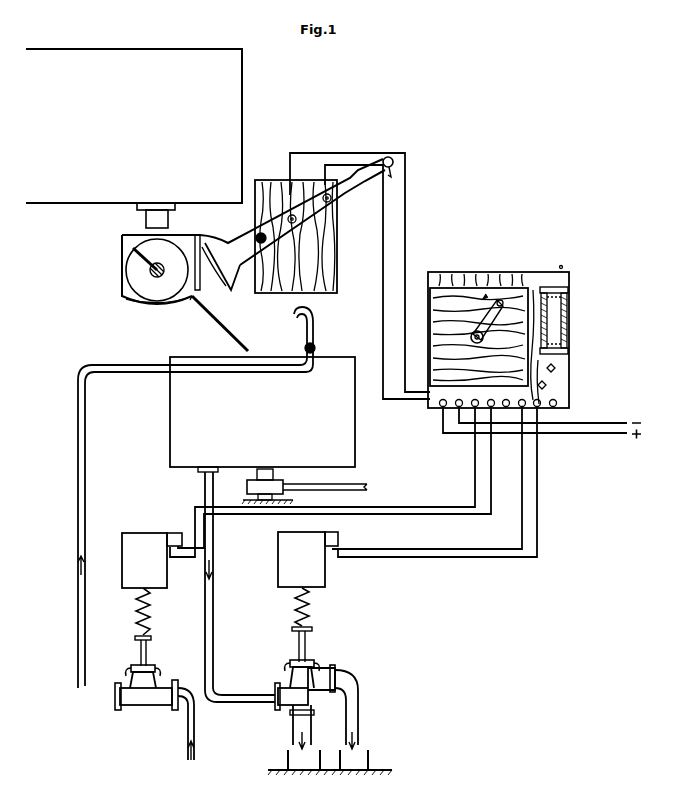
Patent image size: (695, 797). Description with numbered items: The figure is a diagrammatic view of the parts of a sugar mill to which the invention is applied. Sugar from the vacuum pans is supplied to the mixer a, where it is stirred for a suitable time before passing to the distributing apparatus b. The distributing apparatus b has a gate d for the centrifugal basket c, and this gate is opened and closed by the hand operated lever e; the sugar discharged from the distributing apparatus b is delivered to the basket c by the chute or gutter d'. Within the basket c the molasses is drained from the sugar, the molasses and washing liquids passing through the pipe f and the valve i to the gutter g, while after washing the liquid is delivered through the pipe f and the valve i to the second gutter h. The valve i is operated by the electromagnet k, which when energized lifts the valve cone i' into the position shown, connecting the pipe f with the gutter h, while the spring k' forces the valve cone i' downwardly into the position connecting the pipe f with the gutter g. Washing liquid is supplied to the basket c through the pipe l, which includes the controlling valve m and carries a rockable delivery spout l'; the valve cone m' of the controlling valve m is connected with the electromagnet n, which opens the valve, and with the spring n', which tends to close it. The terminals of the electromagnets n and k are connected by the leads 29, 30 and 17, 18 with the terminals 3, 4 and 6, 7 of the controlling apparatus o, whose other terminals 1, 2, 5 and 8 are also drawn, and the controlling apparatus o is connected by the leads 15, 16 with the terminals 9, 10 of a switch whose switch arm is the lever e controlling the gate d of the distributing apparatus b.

The mixer a is at (242, 86).
The distributing apparatus b is at (122, 250).
The centrifugal basket c is at (356, 429).
The gate d is at (182, 314).
The chute or gutter d' is at (224, 323).
The hand operated lever e is at (392, 158).
The pipe f is at (214, 606).
The gutter g is at (364, 752).
The second gutter h is at (288, 754).
The valve i is at (316, 693).
The valve cone i' is at (293, 672).
The electromagnet k is at (296, 559).
The spring k' is at (313, 625).
The pipe l is at (183, 505).
The rockable delivery spout l' is at (310, 330).
The controlling valve m is at (154, 720).
The valve cone m' is at (157, 671).
The electromagnet n is at (152, 548).
The spring n' is at (128, 627).
The controlling apparatus o is at (520, 272).
The terminal 1 is at (441, 408).
The terminal 2 is at (457, 409).
The terminal 3 is at (474, 408).
The terminal 4 is at (490, 408).
The terminal 5 is at (506, 408).
The terminal 6 is at (523, 408).
The terminal 7 is at (539, 408).
The terminal 8 is at (558, 402).
The terminal 9 is at (297, 222).
The terminal 10 is at (331, 201).
The lead 15 is at (383, 279).
The lead 16 is at (405, 244).
The lead 17 is at (470, 549).
The lead 18 is at (515, 557).
The lead 29 is at (405, 507).
The lead 30 is at (428, 514).